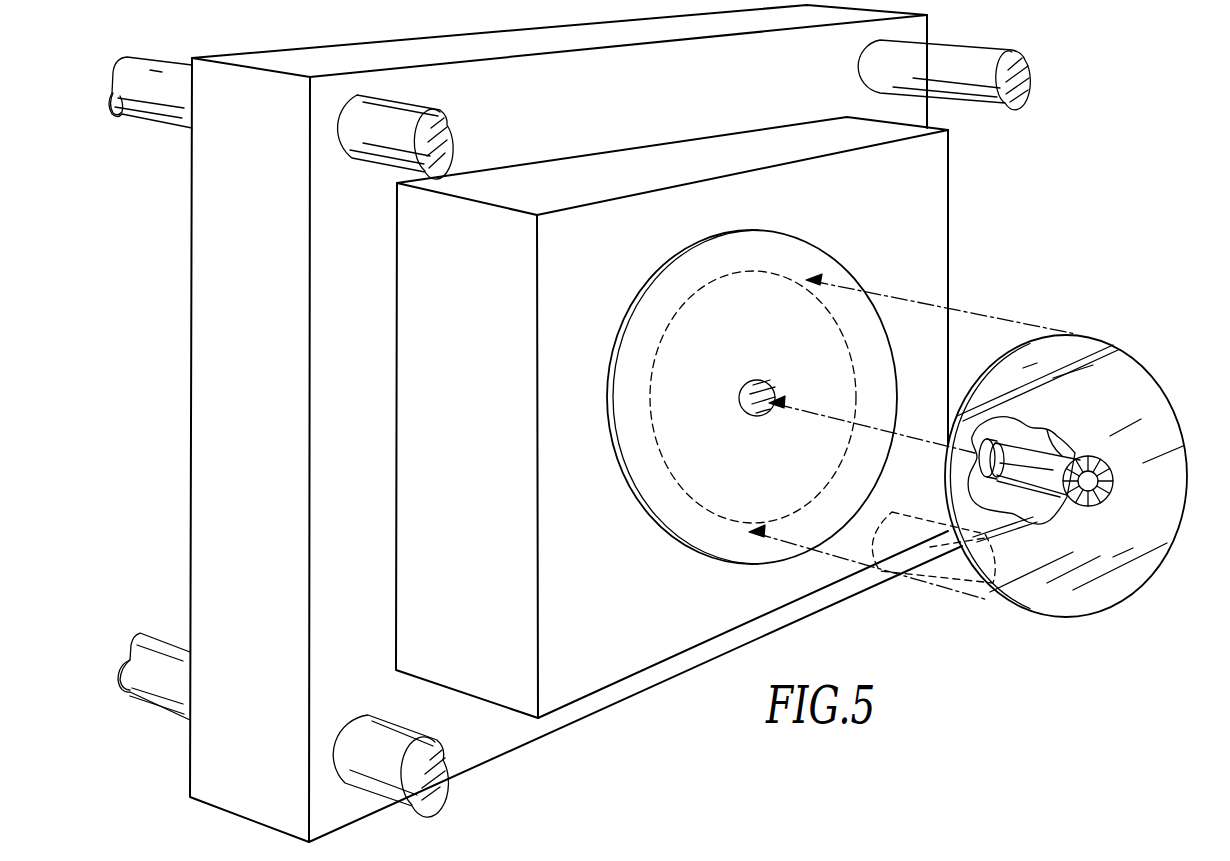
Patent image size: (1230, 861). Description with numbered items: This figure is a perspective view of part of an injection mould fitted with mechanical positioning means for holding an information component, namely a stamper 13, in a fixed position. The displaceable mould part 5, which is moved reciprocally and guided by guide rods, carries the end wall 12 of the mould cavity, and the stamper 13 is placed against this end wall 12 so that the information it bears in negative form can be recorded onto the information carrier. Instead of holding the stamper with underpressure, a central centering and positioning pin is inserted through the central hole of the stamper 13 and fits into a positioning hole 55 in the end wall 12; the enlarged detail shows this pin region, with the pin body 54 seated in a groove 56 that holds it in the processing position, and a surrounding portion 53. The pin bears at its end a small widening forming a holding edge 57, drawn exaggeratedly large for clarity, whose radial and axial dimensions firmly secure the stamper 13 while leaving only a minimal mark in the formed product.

The mould part 5 is at (610, 665).
The end wall 12 is at (663, 383).
The stamper 13 is at (1113, 340).
The housing 53 is at (1164, 522).
The shaft 54 is at (1043, 430).
The positioning hole 55 is at (755, 410).
The groove 56 is at (1006, 423).
The holding edge 57 is at (1090, 455).